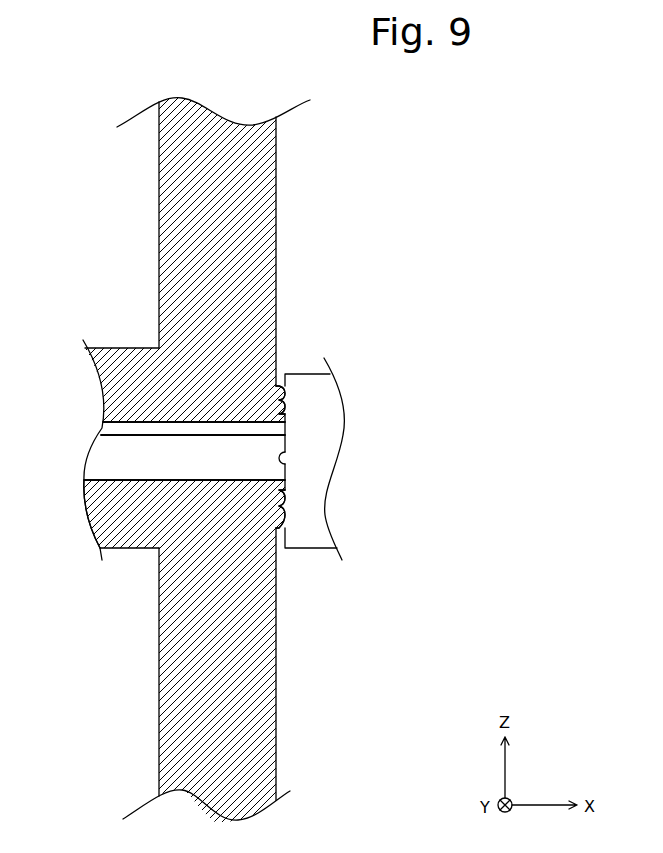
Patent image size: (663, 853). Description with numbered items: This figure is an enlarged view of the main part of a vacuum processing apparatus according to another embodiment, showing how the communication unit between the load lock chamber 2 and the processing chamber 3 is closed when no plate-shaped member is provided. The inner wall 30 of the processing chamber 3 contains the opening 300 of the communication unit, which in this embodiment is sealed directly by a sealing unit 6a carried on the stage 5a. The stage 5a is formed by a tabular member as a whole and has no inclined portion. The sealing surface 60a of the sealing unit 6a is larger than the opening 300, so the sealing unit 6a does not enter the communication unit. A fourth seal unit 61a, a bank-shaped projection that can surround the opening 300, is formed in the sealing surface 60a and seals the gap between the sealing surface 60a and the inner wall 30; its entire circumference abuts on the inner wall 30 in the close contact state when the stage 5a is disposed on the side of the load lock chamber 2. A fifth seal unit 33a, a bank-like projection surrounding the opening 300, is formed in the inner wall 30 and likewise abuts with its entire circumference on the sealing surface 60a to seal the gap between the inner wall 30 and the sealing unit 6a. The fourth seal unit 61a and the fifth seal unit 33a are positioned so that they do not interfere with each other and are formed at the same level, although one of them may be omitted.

The inner wall 30 is at (284, 165).
The processing chamber 3 is at (400, 259).
The fifth seal unit 33a is at (285, 403).
The load lock chamber 2 is at (97, 422).
The opening 300 is at (272, 432).
The sealing surface 60a is at (288, 468).
The stage 5a is at (98, 482).
The fourth seal unit 61a is at (277, 532).
The sealing unit 6a is at (315, 550).